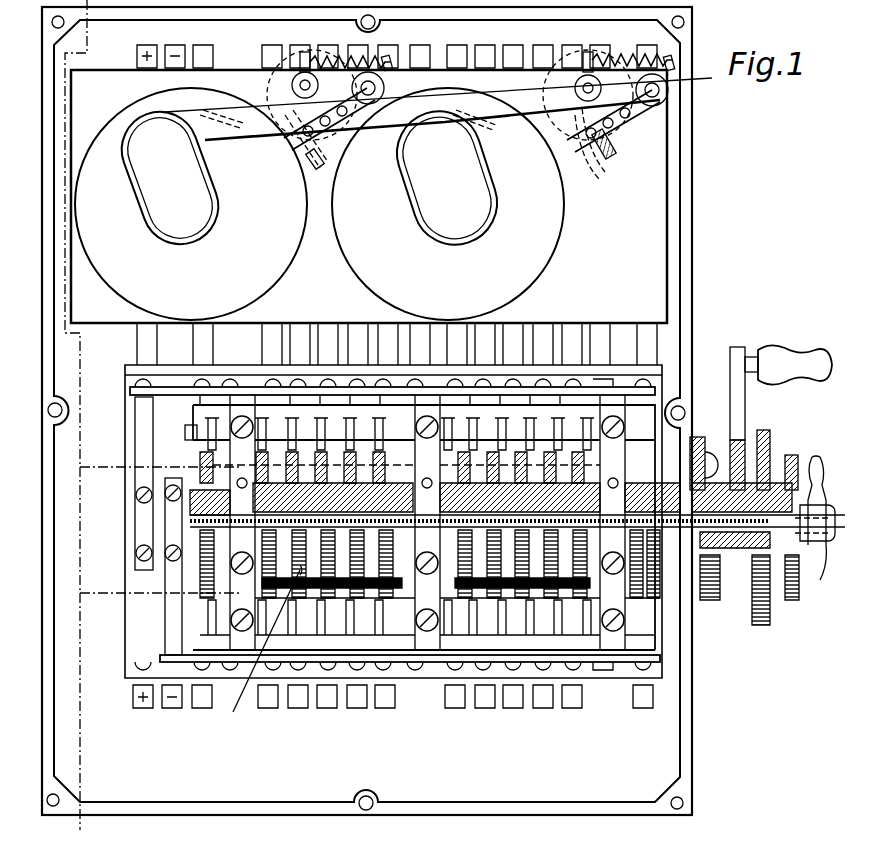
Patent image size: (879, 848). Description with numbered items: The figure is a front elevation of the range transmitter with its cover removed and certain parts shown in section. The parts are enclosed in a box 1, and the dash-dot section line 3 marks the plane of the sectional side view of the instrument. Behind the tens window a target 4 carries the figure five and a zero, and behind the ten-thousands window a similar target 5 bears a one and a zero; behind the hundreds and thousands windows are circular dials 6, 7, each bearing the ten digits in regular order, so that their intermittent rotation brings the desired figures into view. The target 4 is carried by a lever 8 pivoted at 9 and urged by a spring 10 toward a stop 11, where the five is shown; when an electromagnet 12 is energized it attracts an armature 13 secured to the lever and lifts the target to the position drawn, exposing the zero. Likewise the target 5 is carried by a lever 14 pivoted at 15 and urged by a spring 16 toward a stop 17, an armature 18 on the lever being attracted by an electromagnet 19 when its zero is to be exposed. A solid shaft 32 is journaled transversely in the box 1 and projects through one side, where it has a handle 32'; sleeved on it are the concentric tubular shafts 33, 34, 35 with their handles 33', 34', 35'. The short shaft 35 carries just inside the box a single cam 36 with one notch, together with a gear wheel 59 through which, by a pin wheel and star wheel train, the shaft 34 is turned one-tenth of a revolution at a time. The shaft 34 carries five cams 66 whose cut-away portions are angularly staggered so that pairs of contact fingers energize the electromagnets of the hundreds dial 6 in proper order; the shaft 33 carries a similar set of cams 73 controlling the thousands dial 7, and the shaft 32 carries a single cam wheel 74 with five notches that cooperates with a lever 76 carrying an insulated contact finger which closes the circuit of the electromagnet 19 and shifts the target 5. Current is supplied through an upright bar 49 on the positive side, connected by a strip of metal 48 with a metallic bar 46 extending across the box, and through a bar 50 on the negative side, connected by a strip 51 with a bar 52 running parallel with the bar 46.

The box 1 is at (690, 141).
The section line 3— 3 is at (152, 423).
The target 4 is at (553, 182).
The target 5 is at (190, 180).
The circular dial 6 is at (522, 290).
The circular dial 7 is at (108, 290).
The lever 8 is at (500, 110).
The pivot 9 is at (443, 95).
The spring 10 is at (625, 60).
The stop 11 is at (612, 160).
The electromagnet 12 is at (575, 55).
The armature 13 is at (600, 180).
The lever 14 is at (232, 110).
The pivot 15 is at (355, 85).
The spring 16 is at (372, 70).
The stop 17 is at (310, 155).
The armature 18 is at (326, 135).
The electromagnet 19 is at (302, 62).
The solid shaft 32 is at (462, 563).
The handle 32' is at (818, 546).
The tubular shaft 33 is at (527, 639).
The handle 33' is at (822, 495).
The tubular shaft 34 is at (638, 594).
The handle 34' is at (782, 438).
The tubular shaft 35 is at (707, 451).
The handle 35' is at (781, 401).
The cam 36 is at (653, 473).
The metallic bar 46 is at (132, 380).
The strip of metal 48 is at (135, 428).
The upright bar 49 is at (137, 52).
The bar 50 is at (178, 45).
The strip 51 is at (170, 630).
The bar 52 is at (160, 657).
The gear wheel 59 is at (647, 597).
The cams 66 is at (515, 590).
The cams 73 is at (258, 650).
The cam wheel 74 is at (195, 565).
The lever 76 is at (185, 432).